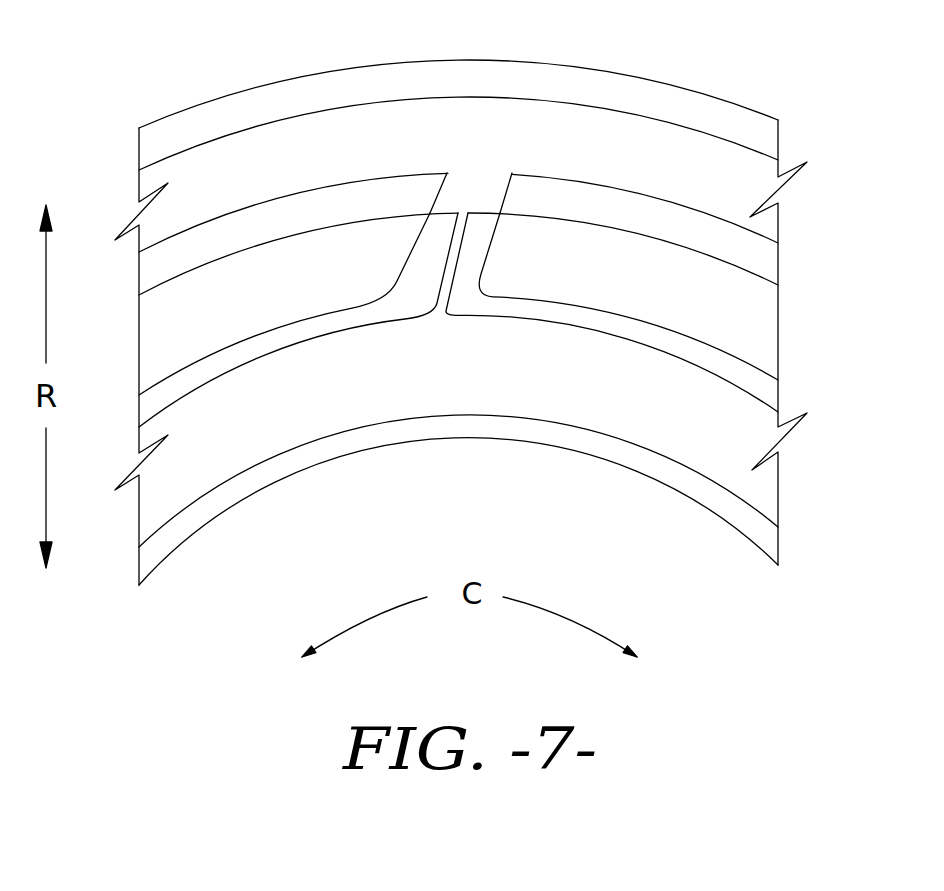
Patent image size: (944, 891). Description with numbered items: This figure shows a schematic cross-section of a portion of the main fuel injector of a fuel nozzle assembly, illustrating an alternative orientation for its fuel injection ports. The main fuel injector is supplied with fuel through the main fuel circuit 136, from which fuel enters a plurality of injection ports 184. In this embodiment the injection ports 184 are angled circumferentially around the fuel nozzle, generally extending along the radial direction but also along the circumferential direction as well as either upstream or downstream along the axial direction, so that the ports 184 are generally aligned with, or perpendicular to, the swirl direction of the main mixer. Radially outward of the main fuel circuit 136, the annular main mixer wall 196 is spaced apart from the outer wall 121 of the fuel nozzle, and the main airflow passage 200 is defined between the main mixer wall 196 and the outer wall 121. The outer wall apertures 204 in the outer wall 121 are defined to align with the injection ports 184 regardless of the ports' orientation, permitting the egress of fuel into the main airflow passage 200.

The outer wall 121 is at (458, 156).
The main fuel circuit 136 is at (706, 421).
The injection ports 184 is at (427, 247).
The main mixer wall 196 is at (693, 113).
The main airflow passage 200 is at (472, 147).
The outer wall apertures 204 is at (477, 180).